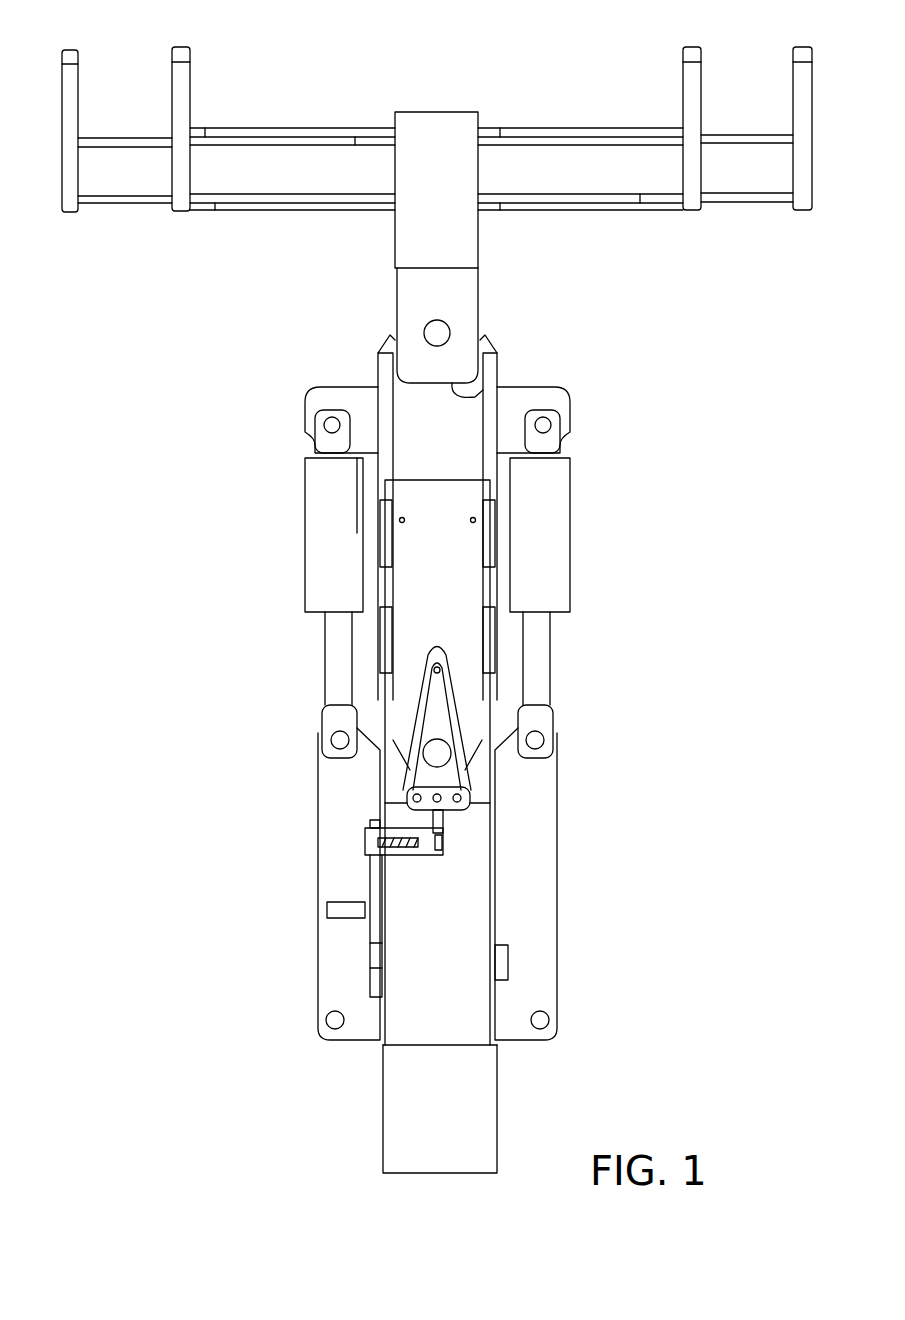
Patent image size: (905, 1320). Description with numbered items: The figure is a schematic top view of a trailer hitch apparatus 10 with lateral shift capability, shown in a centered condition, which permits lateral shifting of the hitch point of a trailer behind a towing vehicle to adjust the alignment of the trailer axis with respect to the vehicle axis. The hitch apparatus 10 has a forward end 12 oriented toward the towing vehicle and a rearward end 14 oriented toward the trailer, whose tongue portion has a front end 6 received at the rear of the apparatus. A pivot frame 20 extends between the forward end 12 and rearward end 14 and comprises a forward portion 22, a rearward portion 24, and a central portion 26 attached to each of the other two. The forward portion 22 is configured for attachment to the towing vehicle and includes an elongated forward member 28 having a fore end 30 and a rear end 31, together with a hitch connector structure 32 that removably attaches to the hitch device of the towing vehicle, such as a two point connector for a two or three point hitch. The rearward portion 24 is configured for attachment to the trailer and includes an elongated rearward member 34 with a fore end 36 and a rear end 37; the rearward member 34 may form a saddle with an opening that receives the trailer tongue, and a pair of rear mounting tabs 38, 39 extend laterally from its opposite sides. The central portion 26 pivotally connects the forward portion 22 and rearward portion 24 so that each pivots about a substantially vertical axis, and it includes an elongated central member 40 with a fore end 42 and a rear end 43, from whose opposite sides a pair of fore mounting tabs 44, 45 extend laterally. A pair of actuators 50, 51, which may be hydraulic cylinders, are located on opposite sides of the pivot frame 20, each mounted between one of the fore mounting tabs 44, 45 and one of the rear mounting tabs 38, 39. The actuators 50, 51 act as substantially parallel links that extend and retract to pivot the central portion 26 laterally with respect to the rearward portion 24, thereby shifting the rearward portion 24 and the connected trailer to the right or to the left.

The front end 6 is at (498, 1100).
The hitch apparatus 10 is at (620, 380).
The forward end 12 is at (532, 88).
The rearward end 14 is at (612, 1016).
The pivot frame 20 is at (512, 666).
The forward portion 22 is at (535, 288).
The rearward portion 24 is at (600, 873).
The central portion 26 is at (595, 540).
The forward member 28 is at (395, 258).
The fore end 30 is at (425, 110).
The rear end 31 is at (497, 383).
The hitch connector structure 32 is at (191, 96).
The rearward member 34 is at (495, 863).
The fore end 36 is at (475, 790).
The rear end 37 is at (423, 1047).
The rear mounting tab 38 is at (318, 818).
The rear mounting tab 39 is at (495, 805).
The central member 40 is at (460, 605).
The fore end 42 is at (378, 368).
The rear end 43 is at (485, 735).
The fore mounting tab 44 is at (302, 413).
The fore mounting tab 45 is at (570, 405).
The actuator 50 is at (303, 543).
The actuator 51 is at (568, 502).